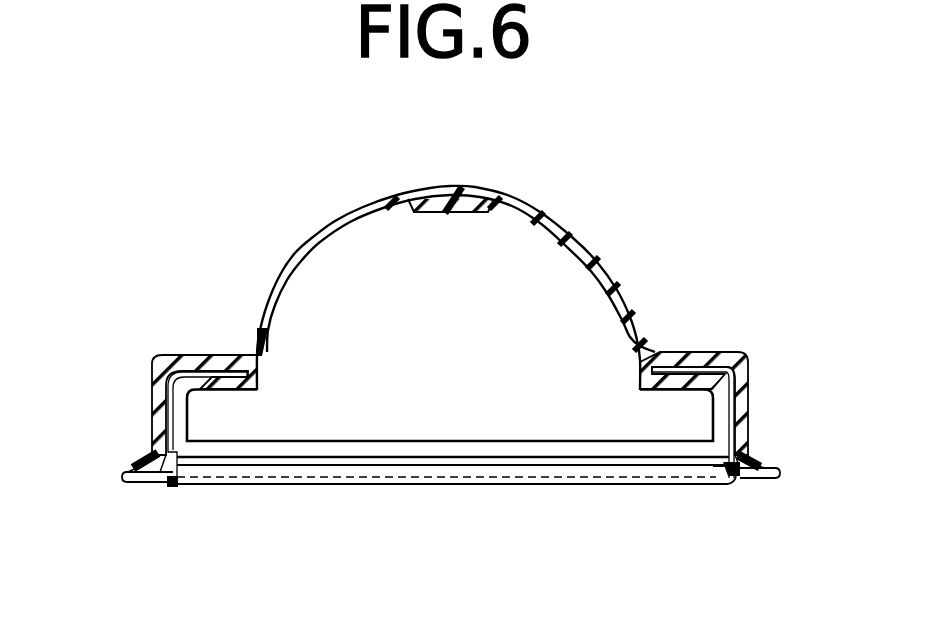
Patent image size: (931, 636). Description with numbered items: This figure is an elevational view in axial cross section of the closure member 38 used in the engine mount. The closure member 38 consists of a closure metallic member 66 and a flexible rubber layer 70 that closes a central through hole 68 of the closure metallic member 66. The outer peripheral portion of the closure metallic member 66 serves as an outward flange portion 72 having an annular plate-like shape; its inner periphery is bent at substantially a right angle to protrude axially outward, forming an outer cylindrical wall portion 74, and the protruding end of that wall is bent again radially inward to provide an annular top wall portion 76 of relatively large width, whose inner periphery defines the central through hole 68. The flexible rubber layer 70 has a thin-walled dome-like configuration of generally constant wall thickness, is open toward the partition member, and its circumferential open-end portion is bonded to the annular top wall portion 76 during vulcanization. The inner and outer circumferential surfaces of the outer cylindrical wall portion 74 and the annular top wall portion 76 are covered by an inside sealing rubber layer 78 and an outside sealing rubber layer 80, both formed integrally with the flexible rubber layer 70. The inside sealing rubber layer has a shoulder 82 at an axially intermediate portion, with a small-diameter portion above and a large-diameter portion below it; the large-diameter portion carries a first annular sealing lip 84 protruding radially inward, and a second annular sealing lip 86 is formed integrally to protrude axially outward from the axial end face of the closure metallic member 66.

The closure member 38 is at (127, 175).
The flexible rubber layer 70 is at (283, 245).
The closure metallic member 66 is at (228, 360).
The central through hole 68 is at (247, 368).
The annular top wall portion 76 is at (706, 368).
The outer cylindrical wall portion 74 is at (163, 413).
The shoulder 82 is at (160, 452).
The outward flange portion 72 is at (142, 482).
The second annular sealing lip 86 is at (174, 487).
The inside sealing rubber layer 78 is at (725, 387).
The outside sealing rubber layer 80 is at (744, 435).
The first annular sealing lip 84 is at (721, 479).